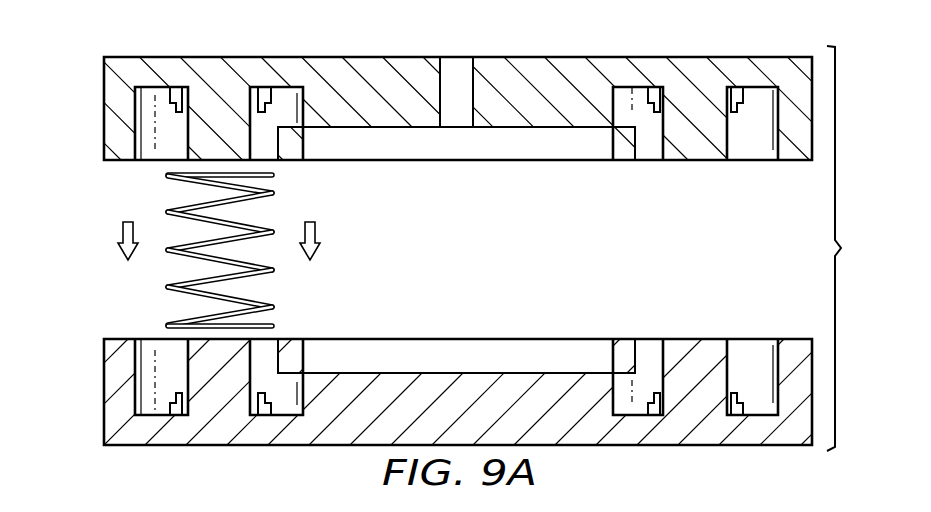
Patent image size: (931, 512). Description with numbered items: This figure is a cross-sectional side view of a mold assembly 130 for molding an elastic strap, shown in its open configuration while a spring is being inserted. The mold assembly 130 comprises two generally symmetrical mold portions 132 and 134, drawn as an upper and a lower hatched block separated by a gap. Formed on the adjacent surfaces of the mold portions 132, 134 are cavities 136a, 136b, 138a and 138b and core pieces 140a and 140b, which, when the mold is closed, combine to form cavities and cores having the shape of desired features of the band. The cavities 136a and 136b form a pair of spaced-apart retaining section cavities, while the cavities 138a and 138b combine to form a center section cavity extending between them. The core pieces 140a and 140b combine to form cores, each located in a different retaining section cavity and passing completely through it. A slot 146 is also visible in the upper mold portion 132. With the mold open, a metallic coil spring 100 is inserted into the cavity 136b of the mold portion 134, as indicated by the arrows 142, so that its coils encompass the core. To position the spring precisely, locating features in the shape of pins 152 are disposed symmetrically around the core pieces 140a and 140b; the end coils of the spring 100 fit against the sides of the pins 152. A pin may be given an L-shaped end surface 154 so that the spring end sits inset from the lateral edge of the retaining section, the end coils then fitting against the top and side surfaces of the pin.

The metallic coil spring 100 is at (163, 269).
The mold assembly 130 is at (855, 248).
The mold portion 132 is at (104, 90).
The mold portion 134 is at (104, 418).
The retaining section cavity 136a is at (150, 161).
The retaining section cavity 136b is at (148, 382).
The center section cavity 138a is at (487, 152).
The center section cavity 138b is at (490, 346).
The core piece 140a is at (212, 112).
The core piece 140b is at (242, 367).
The arrows 142 is at (121, 225).
The slot 146 is at (472, 84).
The locating pins 152 is at (272, 92).
The L-shaped end surface 154 is at (272, 105).